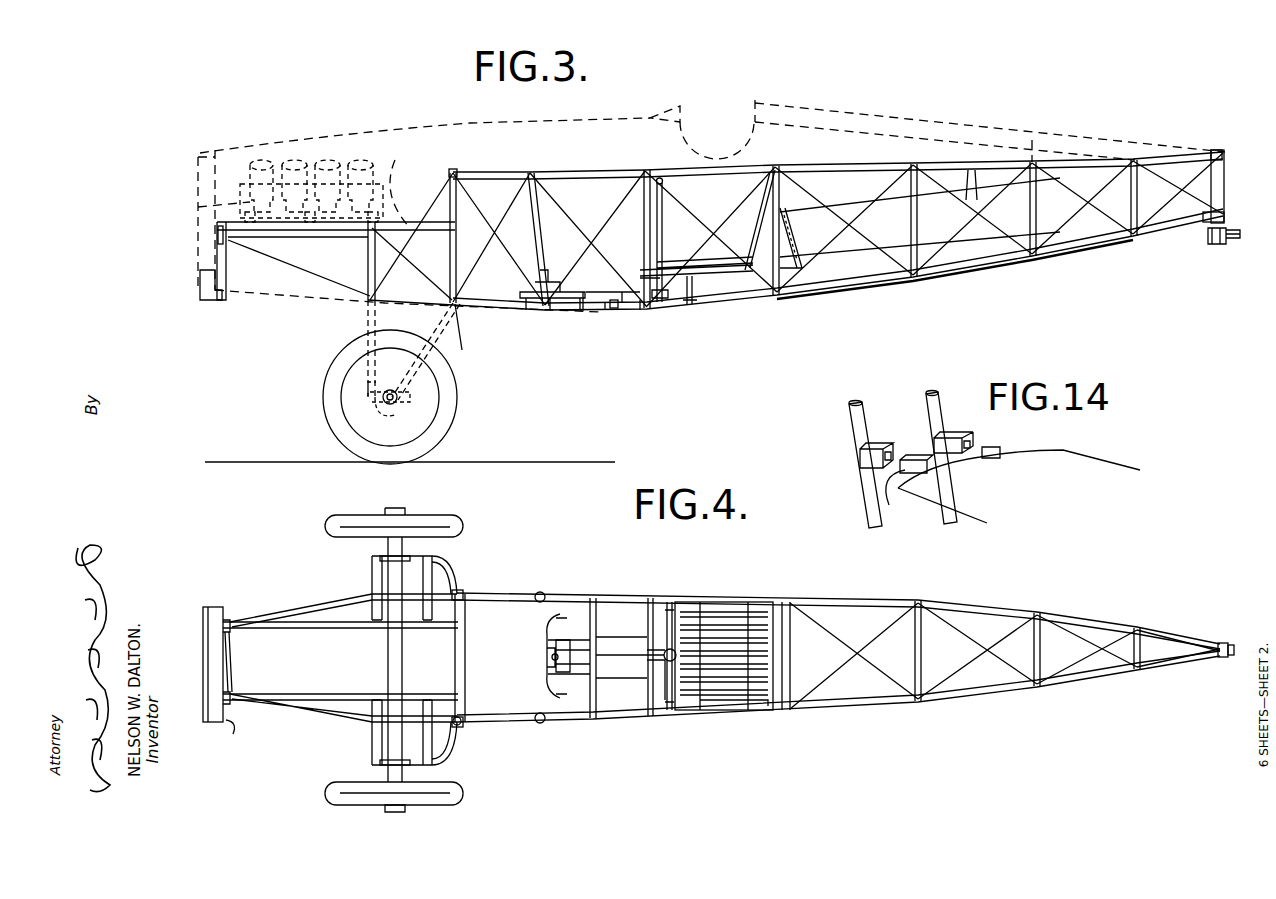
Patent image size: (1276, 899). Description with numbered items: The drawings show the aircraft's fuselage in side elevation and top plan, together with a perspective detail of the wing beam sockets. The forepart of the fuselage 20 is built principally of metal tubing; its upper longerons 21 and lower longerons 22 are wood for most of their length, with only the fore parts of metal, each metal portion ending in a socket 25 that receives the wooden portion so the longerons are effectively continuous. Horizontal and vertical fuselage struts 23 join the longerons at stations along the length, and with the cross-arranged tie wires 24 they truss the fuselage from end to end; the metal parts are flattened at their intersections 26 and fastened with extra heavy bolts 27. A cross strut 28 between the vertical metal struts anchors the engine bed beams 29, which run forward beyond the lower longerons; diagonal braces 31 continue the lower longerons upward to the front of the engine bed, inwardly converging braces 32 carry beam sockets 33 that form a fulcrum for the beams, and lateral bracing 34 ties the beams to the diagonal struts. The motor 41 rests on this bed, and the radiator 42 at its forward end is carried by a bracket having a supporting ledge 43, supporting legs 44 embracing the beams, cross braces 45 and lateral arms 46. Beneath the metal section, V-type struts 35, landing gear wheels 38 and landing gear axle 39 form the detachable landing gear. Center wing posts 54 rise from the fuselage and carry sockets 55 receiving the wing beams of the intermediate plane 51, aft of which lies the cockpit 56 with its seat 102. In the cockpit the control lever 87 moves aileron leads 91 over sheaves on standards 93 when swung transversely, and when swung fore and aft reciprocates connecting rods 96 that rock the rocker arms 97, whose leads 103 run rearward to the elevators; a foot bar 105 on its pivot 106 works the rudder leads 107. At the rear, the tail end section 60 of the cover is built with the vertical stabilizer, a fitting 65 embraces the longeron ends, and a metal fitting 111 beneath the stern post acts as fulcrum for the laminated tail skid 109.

In FIG. 3, the fuselage forepart 20 is at (848, 294).
In FIG. 3, the upper longeron 21 is at (490, 172).
In FIG. 4, the upper longeron 21 is at (493, 594).
In FIG. 3, the lower longeron 22 is at (510, 311).
In FIG. 3, the fuselage strut 23 is at (457, 270).
In FIG. 4, the fuselage strut 23 is at (465, 661).
In FIG. 3, the tie wire 24 is at (606, 228).
In FIG. 4, the tie wire 24 is at (865, 650).
In FIG. 3, the socket 25 is at (530, 172).
In FIG. 4, the socket 25 is at (541, 592).
In FIG. 3, the flattened portion 26 is at (452, 170).
In FIG. 3, the bolt 27 is at (441, 351).
In FIG. 4, the cross strut 28 is at (462, 725).
In FIG. 3, the engine bed beam 29 is at (265, 232).
In FIG. 4, the engine bed beam 29 is at (258, 625).
In FIG. 3, the diagonal brace 31 is at (296, 272).
In FIG. 4, the diagonal brace 31 is at (292, 612).
In FIG. 3, the converging brace 32 is at (368, 247).
In FIG. 3, the beam socket 33 is at (397, 250).
In FIG. 3, the lateral brace 34 is at (395, 172).
In FIG. 4, the lateral brace 34 is at (430, 592).
In FIG. 3, the V-type strut 35 is at (375, 323).
In FIG. 4, the V-type strut 35 is at (455, 752).
In FIG. 3, the landing gear wheel 38 is at (458, 401).
In FIG. 4, the landing gear wheel 38 is at (455, 522).
In FIG. 3, the landing gear axle 39 is at (390, 397).
In FIG. 4, the landing gear axle 39 is at (390, 575).
In FIG. 3, the motor 41 is at (301, 157).
In FIG. 3, the radiator 42 is at (200, 183).
In FIG. 3, the supporting ledge 43 is at (210, 300).
In FIG. 4, the supporting ledge 43 is at (210, 612).
In FIG. 3, the supporting leg 44 is at (217, 246).
In FIG. 4, the cross brace 45 is at (233, 663).
In FIG. 4, the arm 46 is at (225, 738).
In FIG. 14, the intermediate plane 51 is at (1095, 462).
In FIG. 14, the center wing post 54 is at (852, 417).
In FIG. 14, the socket 55 is at (872, 460).
In FIG. 3, the cockpit 56 is at (711, 131).
In FIG. 3, the tail end section 60 is at (1096, 122).
In FIG. 3, the fitting 65 is at (1225, 185).
In FIG. 4, the fitting 65 is at (1222, 643).
In FIG. 3, the control lever 87 is at (657, 238).
In FIG. 4, the control lever 87 is at (664, 656).
In FIG. 4, the aileron lead 91 is at (665, 680).
In FIG. 4, the standard 93 is at (670, 600).
In FIG. 3, the connecting rod 96 is at (690, 262).
In FIG. 3, the rocker arm 97 is at (790, 232).
In FIG. 4, the rocker arm 97 is at (790, 660).
In FIG. 3, the seat 102 is at (718, 278).
In FIG. 4, the seat 102 is at (717, 633).
In FIG. 3, the lead 103 is at (970, 170).
In FIG. 3, the foot bar 105 is at (556, 288).
In FIG. 4, the foot bar 105 is at (550, 676).
In FIG. 4, the pivot 106 is at (556, 650).
In FIG. 4, the rudder lead 107 is at (620, 637).
In FIG. 3, the tail skid 109 is at (1208, 238).
In FIG. 3, the metal fitting 111 is at (1233, 240).